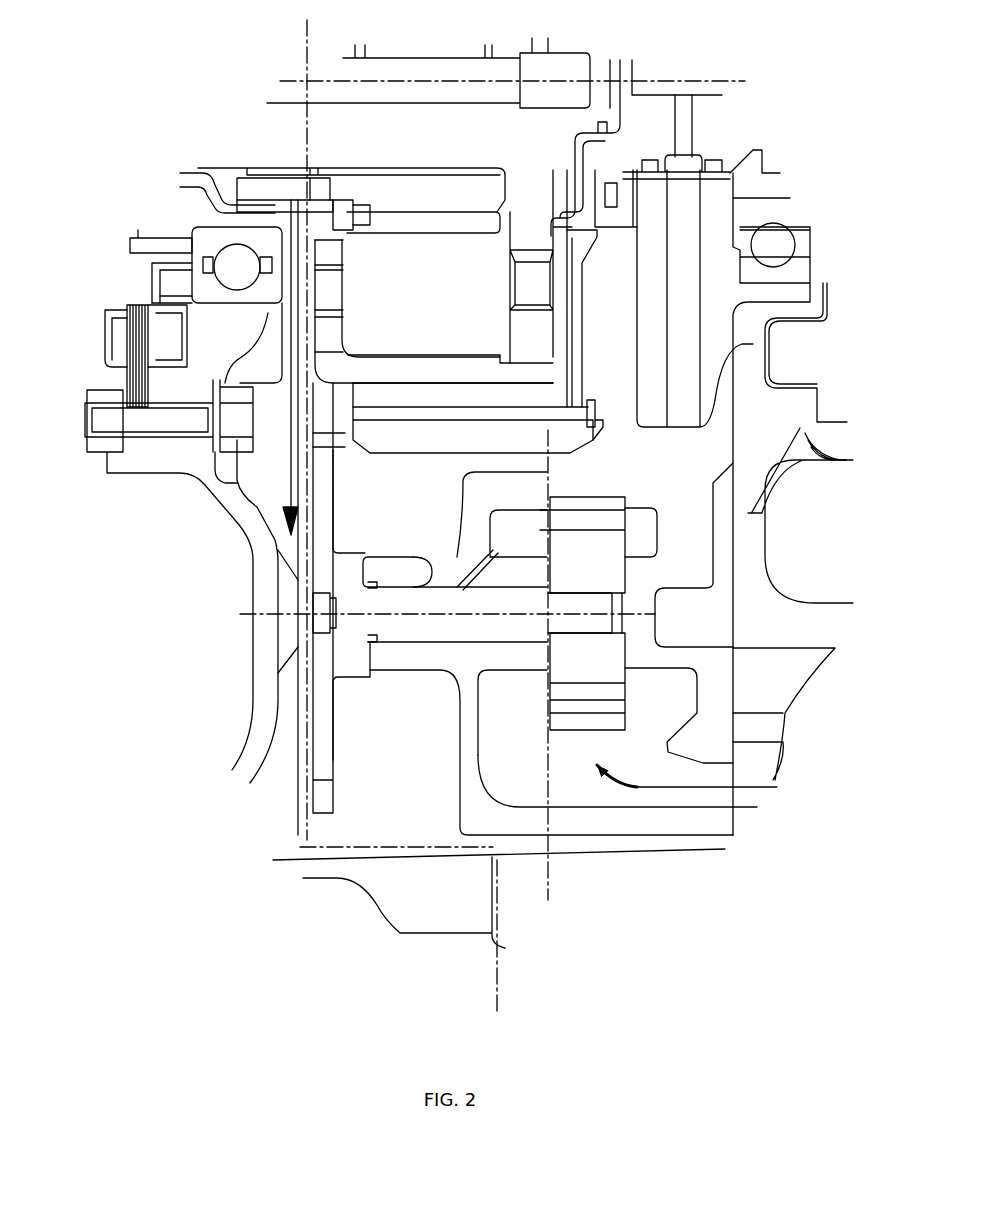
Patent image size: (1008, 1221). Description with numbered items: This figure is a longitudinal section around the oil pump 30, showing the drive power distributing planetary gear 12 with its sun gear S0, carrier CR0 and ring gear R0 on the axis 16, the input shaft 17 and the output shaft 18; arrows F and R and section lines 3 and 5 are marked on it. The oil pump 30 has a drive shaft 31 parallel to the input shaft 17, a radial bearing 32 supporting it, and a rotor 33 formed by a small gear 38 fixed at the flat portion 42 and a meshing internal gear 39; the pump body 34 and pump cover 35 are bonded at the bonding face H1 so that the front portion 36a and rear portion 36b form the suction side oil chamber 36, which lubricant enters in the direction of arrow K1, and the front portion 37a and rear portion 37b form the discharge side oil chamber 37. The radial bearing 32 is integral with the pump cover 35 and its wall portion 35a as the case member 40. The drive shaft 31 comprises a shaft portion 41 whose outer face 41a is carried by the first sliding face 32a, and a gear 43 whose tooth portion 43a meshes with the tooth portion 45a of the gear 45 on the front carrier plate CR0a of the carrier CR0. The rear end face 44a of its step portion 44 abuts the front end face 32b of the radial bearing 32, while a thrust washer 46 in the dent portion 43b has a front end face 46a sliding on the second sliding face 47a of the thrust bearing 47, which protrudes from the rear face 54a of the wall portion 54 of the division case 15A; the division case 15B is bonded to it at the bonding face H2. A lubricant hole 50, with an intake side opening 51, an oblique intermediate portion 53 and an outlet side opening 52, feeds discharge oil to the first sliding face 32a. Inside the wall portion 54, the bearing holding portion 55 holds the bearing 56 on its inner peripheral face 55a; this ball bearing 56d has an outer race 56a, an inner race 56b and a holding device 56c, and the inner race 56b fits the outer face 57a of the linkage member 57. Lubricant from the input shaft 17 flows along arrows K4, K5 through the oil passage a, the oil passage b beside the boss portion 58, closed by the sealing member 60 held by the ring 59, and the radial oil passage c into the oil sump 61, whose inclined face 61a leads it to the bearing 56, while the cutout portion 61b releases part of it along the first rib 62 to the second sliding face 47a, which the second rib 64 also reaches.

The drive power distributing planetary gear 12 is at (588, 292).
The division case 15A is at (372, 910).
The division case 15B is at (607, 915).
The axis 16 is at (710, 93).
The input shaft 17 is at (427, 105).
The output shaft 18 is at (650, 95).
The oil pump 30 is at (447, 683).
The drive shaft 31 is at (437, 650).
The radial bearing 32 is at (380, 550).
The first sliding face 32a is at (425, 570).
The front end face 32b is at (365, 570).
The rotor 33 is at (628, 570).
The pump body 34 is at (660, 837).
The pump cover 35 is at (517, 837).
The wall portion 35a is at (477, 507).
The suction side oil chamber 36 is at (668, 710).
The front portion 36a is at (487, 787).
The rear portion 36b is at (668, 770).
The discharge side oil chamber 37 is at (642, 505).
The front portion 37a is at (503, 523).
The rear portion 37b is at (647, 532).
The small gear 38 is at (615, 652).
The internal gear 39 is at (617, 708).
The case member 40 is at (457, 832).
The shaft portion 41 is at (472, 630).
The outer face 41a is at (502, 643).
The flat portion 42 is at (570, 622).
The gear 43 is at (313, 762).
The tooth portion 43a is at (333, 433).
The dent portion 43b is at (370, 586).
The step portion 44 is at (348, 650).
The rear end face 44a is at (372, 647).
The gear 45 is at (332, 362).
The tooth portion 45a is at (333, 378).
The thrust washer 46 is at (290, 648).
The front end face 46a is at (307, 635).
The thrust bearing 47 is at (285, 582).
The second sliding face 47a is at (310, 592).
The lubricant hole 50 is at (487, 570).
The intake side opening 51 is at (493, 550).
The outlet side opening 52 is at (462, 588).
The intermediate portion 53 is at (470, 567).
The wall portion 54 is at (250, 533).
The rear face 54a is at (277, 708).
The bearing holding portion 55 is at (238, 323).
The inner peripheral face 55a is at (227, 300).
The bearing 56 is at (190, 228).
The outer race 56a is at (207, 298).
The inner race 56b is at (203, 235).
The holding device 56c is at (207, 263).
The ball bearing 56d is at (237, 267).
The linkage member 57 is at (253, 217).
The outer face 57a is at (272, 233).
The boss portion 58 is at (320, 192).
The ring 59 is at (343, 220).
The sealing member 60 is at (367, 212).
The oil sump 61 is at (272, 360).
The inclined face 61a is at (318, 265).
The cutout portion 61b is at (262, 328).
The first rib 62 is at (257, 498).
The second rib 64 is at (278, 727).
The oil passage a is at (190, 193).
The oil passage b is at (285, 200).
The oil passage c is at (302, 217).
The arrow K4 is at (235, 200).
The arrow K5 is at (300, 313).
The arrow K1 is at (713, 790).
The carrier CR0 is at (540, 327).
The front carrier plate CR0a is at (333, 308).
The sun gear S0 is at (473, 225).
The ring gear R0 is at (517, 433).
The bonding face H1 is at (550, 820).
The bonding face H2 is at (500, 918).
The front direction F is at (247, 82).
The arrow R is at (765, 82).
The line 3- 3 is at (552, 437).
The line 5- 5 is at (310, 33).